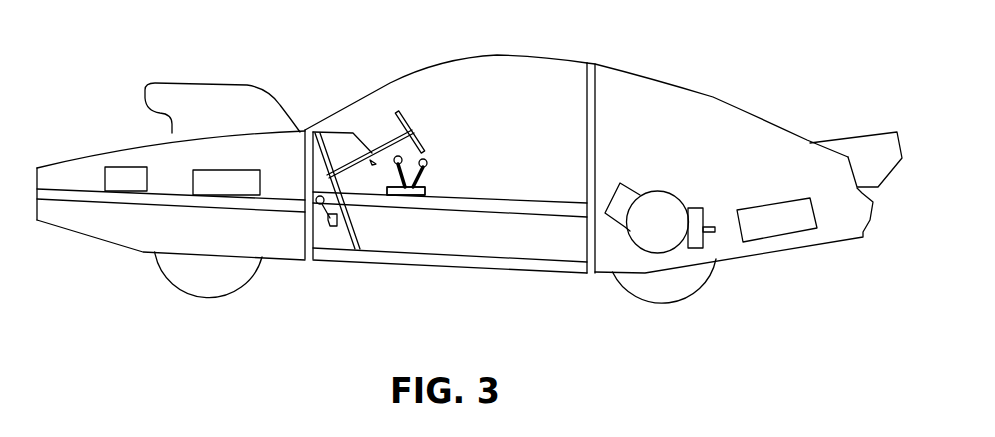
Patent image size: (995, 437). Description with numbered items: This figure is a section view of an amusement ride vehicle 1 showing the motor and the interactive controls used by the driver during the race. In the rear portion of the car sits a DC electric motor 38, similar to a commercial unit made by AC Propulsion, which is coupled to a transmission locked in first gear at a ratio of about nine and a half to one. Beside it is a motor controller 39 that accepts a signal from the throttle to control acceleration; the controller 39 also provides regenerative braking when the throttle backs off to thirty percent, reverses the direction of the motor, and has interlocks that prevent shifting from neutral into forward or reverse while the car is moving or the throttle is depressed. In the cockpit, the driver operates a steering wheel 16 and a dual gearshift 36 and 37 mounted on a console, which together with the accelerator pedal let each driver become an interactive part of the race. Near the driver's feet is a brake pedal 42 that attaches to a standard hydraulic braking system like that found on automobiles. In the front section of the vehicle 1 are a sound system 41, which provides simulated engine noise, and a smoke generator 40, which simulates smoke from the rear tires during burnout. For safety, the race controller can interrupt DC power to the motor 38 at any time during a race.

The vehicle body 1 is at (720, 100).
The steering wheel 16 is at (415, 137).
The dual gearshift 36 is at (430, 177).
The dual gearshift 37 is at (392, 177).
The DC electric motor 38 is at (635, 245).
The motor controller 39 is at (775, 228).
The smoke generator 40 is at (238, 185).
The sound system 41 is at (117, 177).
The brake pedal 42 is at (332, 228).